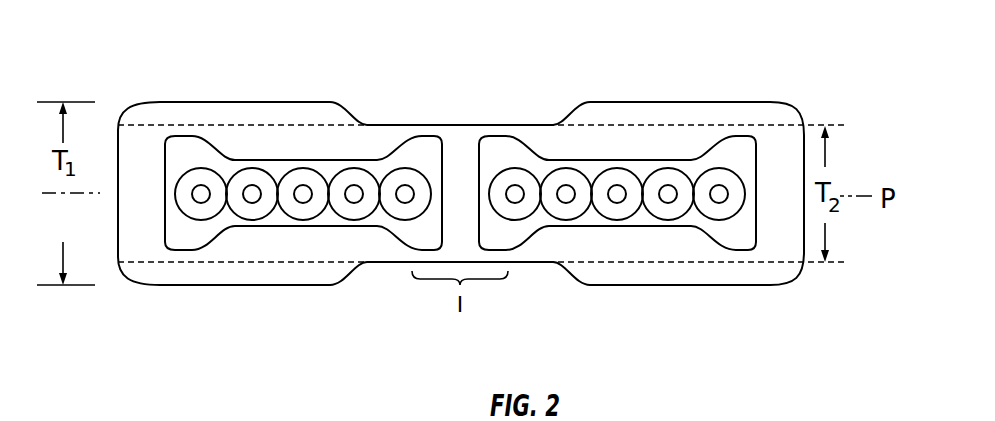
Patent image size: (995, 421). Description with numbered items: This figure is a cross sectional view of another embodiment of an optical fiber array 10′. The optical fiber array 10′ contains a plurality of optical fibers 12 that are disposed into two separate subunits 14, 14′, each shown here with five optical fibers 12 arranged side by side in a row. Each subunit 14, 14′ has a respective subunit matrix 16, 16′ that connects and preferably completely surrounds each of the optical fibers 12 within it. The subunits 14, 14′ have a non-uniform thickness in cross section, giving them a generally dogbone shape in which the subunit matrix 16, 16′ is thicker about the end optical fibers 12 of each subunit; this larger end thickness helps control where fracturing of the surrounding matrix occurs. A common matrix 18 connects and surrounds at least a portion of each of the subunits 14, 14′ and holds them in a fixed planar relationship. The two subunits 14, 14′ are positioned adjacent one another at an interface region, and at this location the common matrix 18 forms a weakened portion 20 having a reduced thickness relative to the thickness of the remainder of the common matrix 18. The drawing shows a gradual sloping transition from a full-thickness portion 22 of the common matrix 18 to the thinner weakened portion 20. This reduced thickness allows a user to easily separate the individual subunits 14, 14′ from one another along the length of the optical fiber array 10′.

The optical fiber array 10′ is at (810, 87).
The optical fibers 12 is at (199, 213).
The subunit 14 is at (285, 232).
The subunit 14′ is at (655, 235).
The subunit matrix 16 is at (320, 227).
The subunit matrix 16′ is at (595, 228).
The common matrix 18 is at (690, 90).
The weakened portion 20 is at (495, 101).
The portion 22 is at (243, 90).